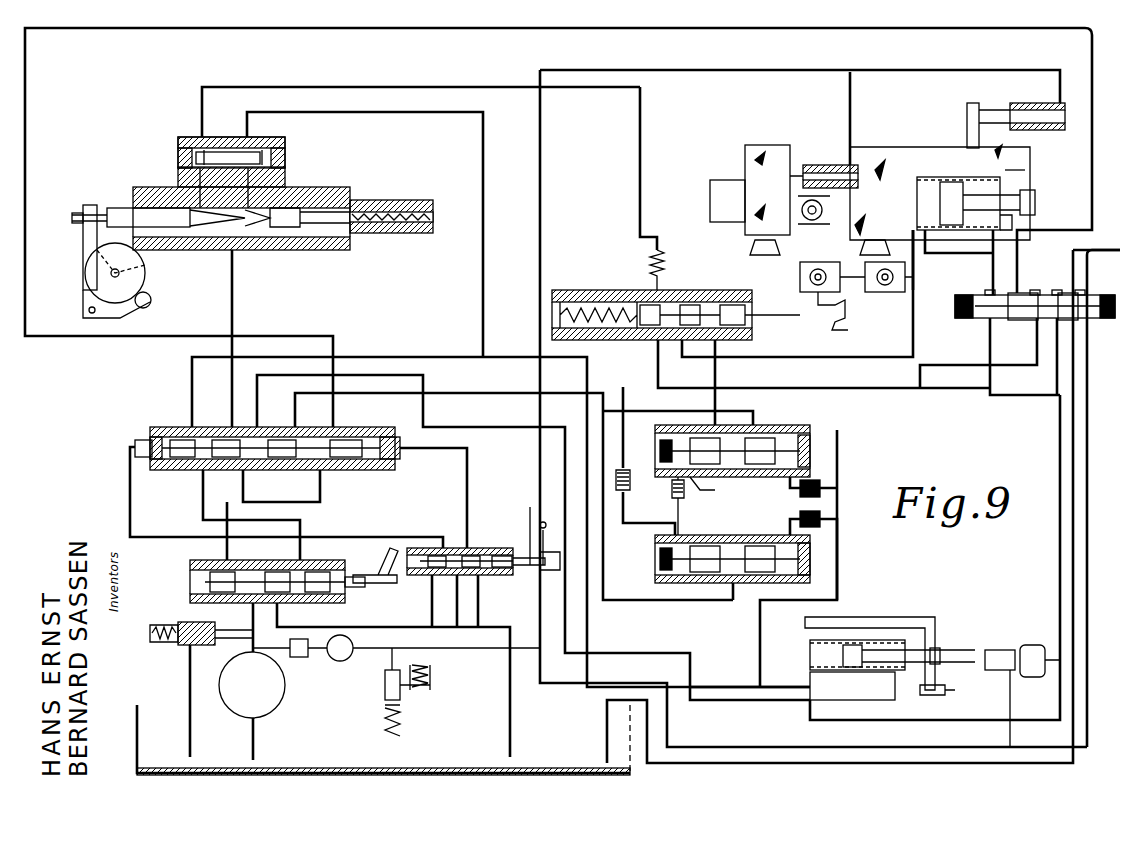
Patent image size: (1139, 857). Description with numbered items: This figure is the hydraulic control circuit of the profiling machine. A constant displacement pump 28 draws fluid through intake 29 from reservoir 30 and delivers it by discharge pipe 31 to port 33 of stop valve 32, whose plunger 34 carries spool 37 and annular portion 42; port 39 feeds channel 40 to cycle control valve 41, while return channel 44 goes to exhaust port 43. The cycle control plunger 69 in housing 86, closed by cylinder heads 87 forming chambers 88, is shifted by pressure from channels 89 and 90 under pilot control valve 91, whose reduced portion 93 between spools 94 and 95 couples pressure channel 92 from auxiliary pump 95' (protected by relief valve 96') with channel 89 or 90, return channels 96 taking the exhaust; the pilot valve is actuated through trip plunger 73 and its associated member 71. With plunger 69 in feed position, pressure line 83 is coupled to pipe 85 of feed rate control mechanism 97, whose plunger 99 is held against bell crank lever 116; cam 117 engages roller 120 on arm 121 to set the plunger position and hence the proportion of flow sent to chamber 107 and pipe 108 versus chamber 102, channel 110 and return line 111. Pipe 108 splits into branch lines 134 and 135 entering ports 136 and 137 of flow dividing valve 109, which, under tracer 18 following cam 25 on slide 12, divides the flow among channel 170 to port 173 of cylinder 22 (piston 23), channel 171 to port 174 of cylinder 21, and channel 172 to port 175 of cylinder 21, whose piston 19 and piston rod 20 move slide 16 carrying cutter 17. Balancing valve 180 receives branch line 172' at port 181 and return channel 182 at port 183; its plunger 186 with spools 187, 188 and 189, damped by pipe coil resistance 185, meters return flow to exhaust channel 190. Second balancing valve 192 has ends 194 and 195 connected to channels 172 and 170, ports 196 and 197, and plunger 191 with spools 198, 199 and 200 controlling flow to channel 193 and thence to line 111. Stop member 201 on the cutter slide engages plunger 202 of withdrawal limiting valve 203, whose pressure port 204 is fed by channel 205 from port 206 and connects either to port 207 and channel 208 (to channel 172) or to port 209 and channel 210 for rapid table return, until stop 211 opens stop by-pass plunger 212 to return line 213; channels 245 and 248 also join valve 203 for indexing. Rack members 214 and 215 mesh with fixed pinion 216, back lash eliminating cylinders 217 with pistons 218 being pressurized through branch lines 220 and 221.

The channel 205 is at (253, 337).
The pipe 108 is at (297, 87).
The branch line 134 is at (641, 132).
The port 136 is at (628, 290).
The channel 110 is at (342, 118).
The branch line 135 is at (700, 110).
The channel 248 is at (1088, 452).
The channel 245 is at (1095, 255).
The return line 213 is at (774, 763).
The return line 111 is at (193, 403).
The channel 170 is at (258, 403).
The channel 171 is at (296, 402).
The channel 172 is at (824, 513).
The branch line 172' is at (738, 382).
The pipe 85 is at (236, 272).
The channel 89 is at (128, 490).
The return channel 44 is at (200, 504).
The channel 40 is at (285, 505).
The pressure line 83 is at (246, 480).
The channel 90 is at (466, 482).
The channel 92 is at (462, 632).
The spool 94 is at (443, 601).
The spool 95 is at (489, 601).
The return channels 96 is at (457, 601).
The intake 29 is at (256, 738).
The pump 28 is at (280, 702).
The discharge pipe 31 is at (240, 650).
The auxiliary pump 95' is at (396, 660).
The relief valve 96' is at (360, 687).
The reservoir 30 is at (140, 708).
The port 206 is at (348, 427).
The cylinder heads 87 is at (398, 440).
The chambers 88 is at (158, 470).
The cycle control valve 41 is at (152, 427).
The valve plunger 69 is at (186, 427).
The valve housing 86 is at (186, 427).
The stop valve 32 is at (190, 596).
The plunger 34 is at (200, 578).
The port 39 is at (225, 562).
The port 33 is at (242, 603).
The annular portion 42 is at (300, 608).
The spool 37 is at (330, 600).
The exhaust port 43 is at (386, 598).
The reduced annular portion 93 is at (455, 548).
The pilot control valve 91 is at (520, 550).
The link 71 is at (530, 508).
The trip plunger 73 is at (540, 527).
The feed rate control mechanism 97 is at (165, 187).
The chamber 107 is at (182, 137).
The chamber 102 is at (286, 152).
The plunger 99 is at (115, 208).
The bell crank lever 116 is at (83, 235).
The cam 117 is at (140, 276).
The roller 120 is at (152, 296).
The arm 121 is at (110, 315).
The flow dividing valve 109 is at (562, 290).
The port 137 is at (700, 292).
The balancing valve 180 is at (795, 425).
The port 183 is at (760, 427).
The port 181 is at (705, 425).
The pipe coil resistance 185 is at (645, 461).
The intermediate spool 187 is at (696, 506).
The end spool 188 is at (705, 487).
The valve plunger 186 is at (768, 477).
The exhaust channel 190 is at (798, 503).
The end spool 189 is at (818, 455).
The end 195 is at (815, 540).
The port 196 is at (718, 537).
The port 197 is at (758, 537).
The end spool 200 is at (815, 560).
The end 194 is at (658, 563).
The end spool 199 is at (698, 575).
The channel 193 is at (624, 603).
The intermediate spool 198 is at (733, 595).
The second balancing valve 192 is at (798, 599).
The plunger 191 is at (760, 593).
The cylinder 22 is at (808, 646).
The return channel 182 is at (808, 680).
The piston 23 is at (832, 678).
The slide 12 is at (936, 620).
The port 173 is at (902, 672).
The stop 211 is at (945, 692).
The stop by-pass plunger 212 is at (995, 650).
The channel 210 is at (1058, 632).
The port 209 is at (988, 325).
The port 207 is at (1035, 325).
The withdrawal limiting valve 203 is at (1075, 356).
The valve plunger 202 is at (1058, 295).
The pressure port 204 is at (1018, 295).
The channel 208 is at (940, 388).
The stop member 201 is at (912, 300).
The tracer 18 is at (890, 300).
The cam 25 is at (862, 325).
The fixed pinion 216 is at (800, 210).
The rack member 215 is at (800, 165).
The rack member 214 is at (820, 225).
The cutter 17 is at (870, 250).
The branch line 220 is at (850, 88).
The back lash eliminating cylinders 217 is at (845, 165).
The pistons 218 is at (815, 165).
The branch line 221 is at (1052, 88).
The slide 16 is at (878, 150).
The piston 19 is at (950, 195).
The piston rod 20 is at (1030, 200).
The cylinder 21 is at (1025, 170).
The port 174 is at (1012, 228).
The port 175 is at (927, 233).